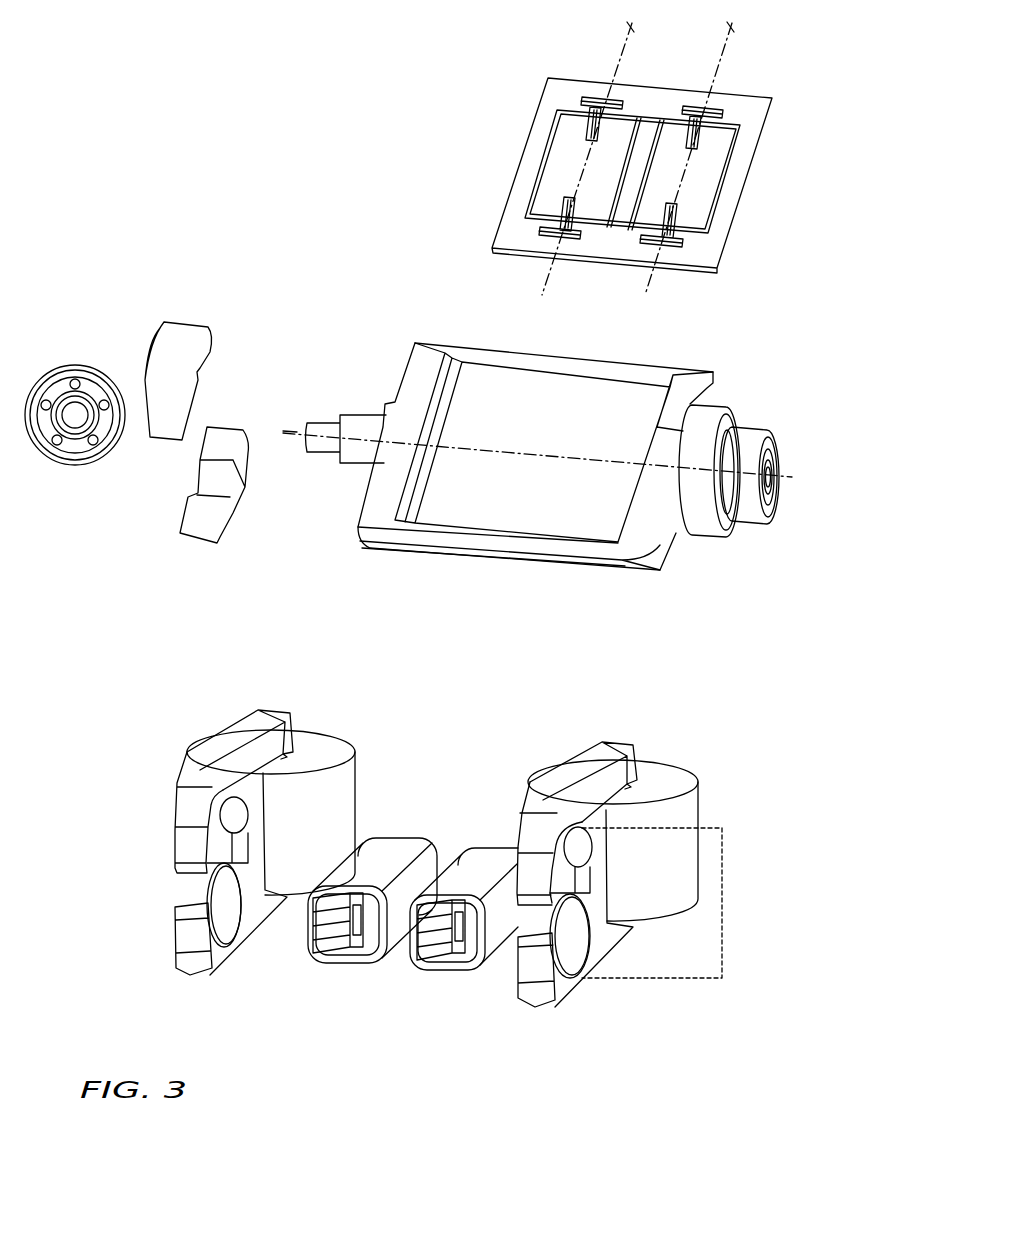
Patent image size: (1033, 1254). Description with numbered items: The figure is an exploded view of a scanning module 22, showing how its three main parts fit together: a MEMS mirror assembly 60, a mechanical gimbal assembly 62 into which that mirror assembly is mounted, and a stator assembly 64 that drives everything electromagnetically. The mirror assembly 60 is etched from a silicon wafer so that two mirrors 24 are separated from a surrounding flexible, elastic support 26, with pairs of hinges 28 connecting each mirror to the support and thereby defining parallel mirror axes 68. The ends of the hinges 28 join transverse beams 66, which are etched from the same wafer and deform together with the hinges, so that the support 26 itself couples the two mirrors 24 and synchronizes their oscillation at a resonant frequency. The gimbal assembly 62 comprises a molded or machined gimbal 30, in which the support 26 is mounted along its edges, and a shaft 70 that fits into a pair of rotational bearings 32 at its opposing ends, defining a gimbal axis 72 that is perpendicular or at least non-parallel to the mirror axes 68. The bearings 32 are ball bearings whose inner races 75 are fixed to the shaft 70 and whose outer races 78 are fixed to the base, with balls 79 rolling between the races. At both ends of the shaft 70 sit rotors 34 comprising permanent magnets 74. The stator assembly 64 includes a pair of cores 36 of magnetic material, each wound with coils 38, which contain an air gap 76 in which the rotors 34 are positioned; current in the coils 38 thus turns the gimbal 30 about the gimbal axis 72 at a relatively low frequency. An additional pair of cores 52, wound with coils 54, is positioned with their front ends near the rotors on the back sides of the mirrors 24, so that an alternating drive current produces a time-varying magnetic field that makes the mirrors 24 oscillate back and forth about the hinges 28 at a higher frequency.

The scanning module 22 is at (244, 63).
The mirrors 24 is at (552, 162).
The support 26 is at (548, 80).
The hinges 28 is at (580, 118).
The gimbal 30 is at (704, 370).
The rotational bearings 32 is at (760, 428).
The rotors 34 is at (697, 538).
The cores 36 is at (195, 977).
The coils 38 is at (333, 733).
The cores 52 is at (330, 965).
The coils 54 is at (407, 833).
The mirror assembly 60 is at (812, 82).
The gimbal assembly 62 is at (817, 367).
The stator assembly 64 is at (817, 728).
The transverse beams 66 is at (597, 99).
The mirror axes 68 is at (730, 25).
The shaft 70 is at (323, 455).
The gimbal axis 72 is at (291, 430).
The permanent magnets 74 is at (155, 328).
The inner races 75 is at (88, 398).
The air gap 76 is at (722, 828).
The outer races 78 is at (67, 368).
The balls 79 is at (78, 388).